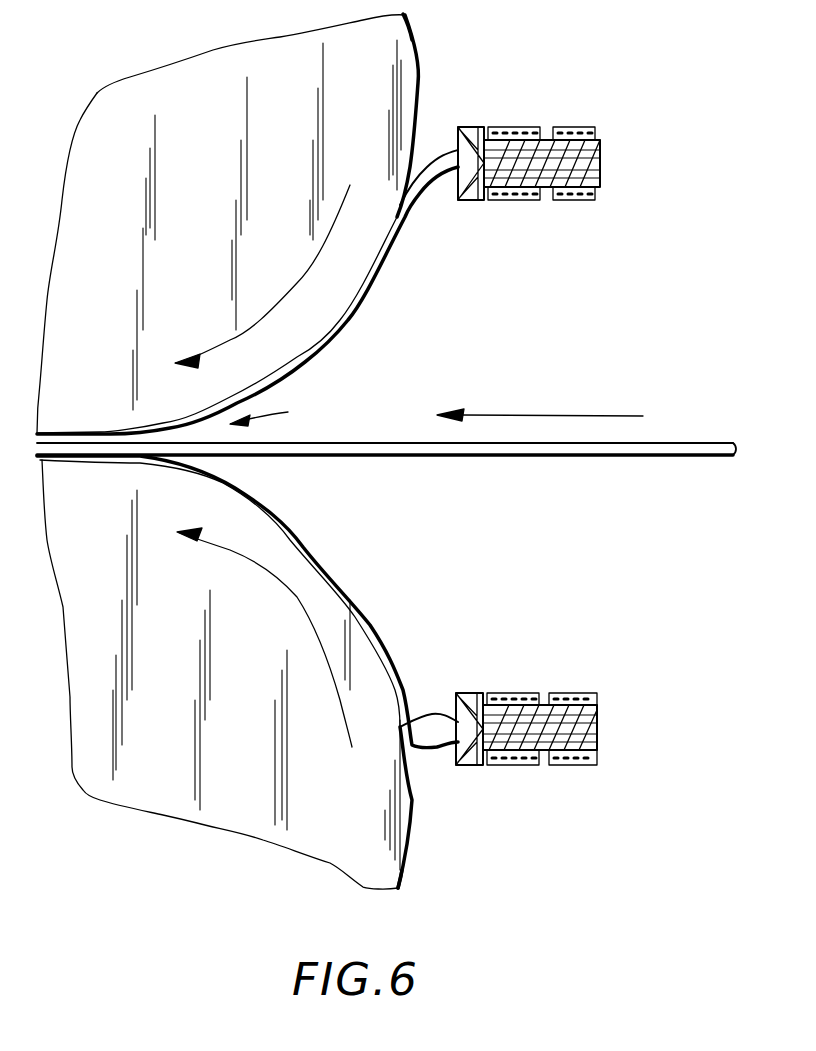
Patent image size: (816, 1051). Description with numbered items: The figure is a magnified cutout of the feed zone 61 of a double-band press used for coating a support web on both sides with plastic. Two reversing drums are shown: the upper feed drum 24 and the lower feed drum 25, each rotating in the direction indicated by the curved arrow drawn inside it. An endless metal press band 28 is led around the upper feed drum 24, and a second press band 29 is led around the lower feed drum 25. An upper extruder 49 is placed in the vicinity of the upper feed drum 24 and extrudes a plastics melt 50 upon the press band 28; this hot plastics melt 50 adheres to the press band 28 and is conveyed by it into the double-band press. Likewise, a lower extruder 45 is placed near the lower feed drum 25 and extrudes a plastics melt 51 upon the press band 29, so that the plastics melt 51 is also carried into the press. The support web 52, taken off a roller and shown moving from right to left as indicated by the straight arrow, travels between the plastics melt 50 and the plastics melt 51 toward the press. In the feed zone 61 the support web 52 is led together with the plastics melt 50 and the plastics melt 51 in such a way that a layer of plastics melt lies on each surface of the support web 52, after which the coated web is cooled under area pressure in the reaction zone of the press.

The upper feed drum 24 is at (227, 72).
The lower feed drum 25 is at (175, 807).
The press band 28 is at (413, 38).
The press band 29 is at (400, 877).
The lower extruder 45 is at (525, 766).
The upper extruder 49 is at (552, 136).
The plastics melt 50 is at (442, 155).
The plastics melt 51 is at (430, 750).
The support web 52 is at (600, 448).
The feed zone 61 is at (278, 413).